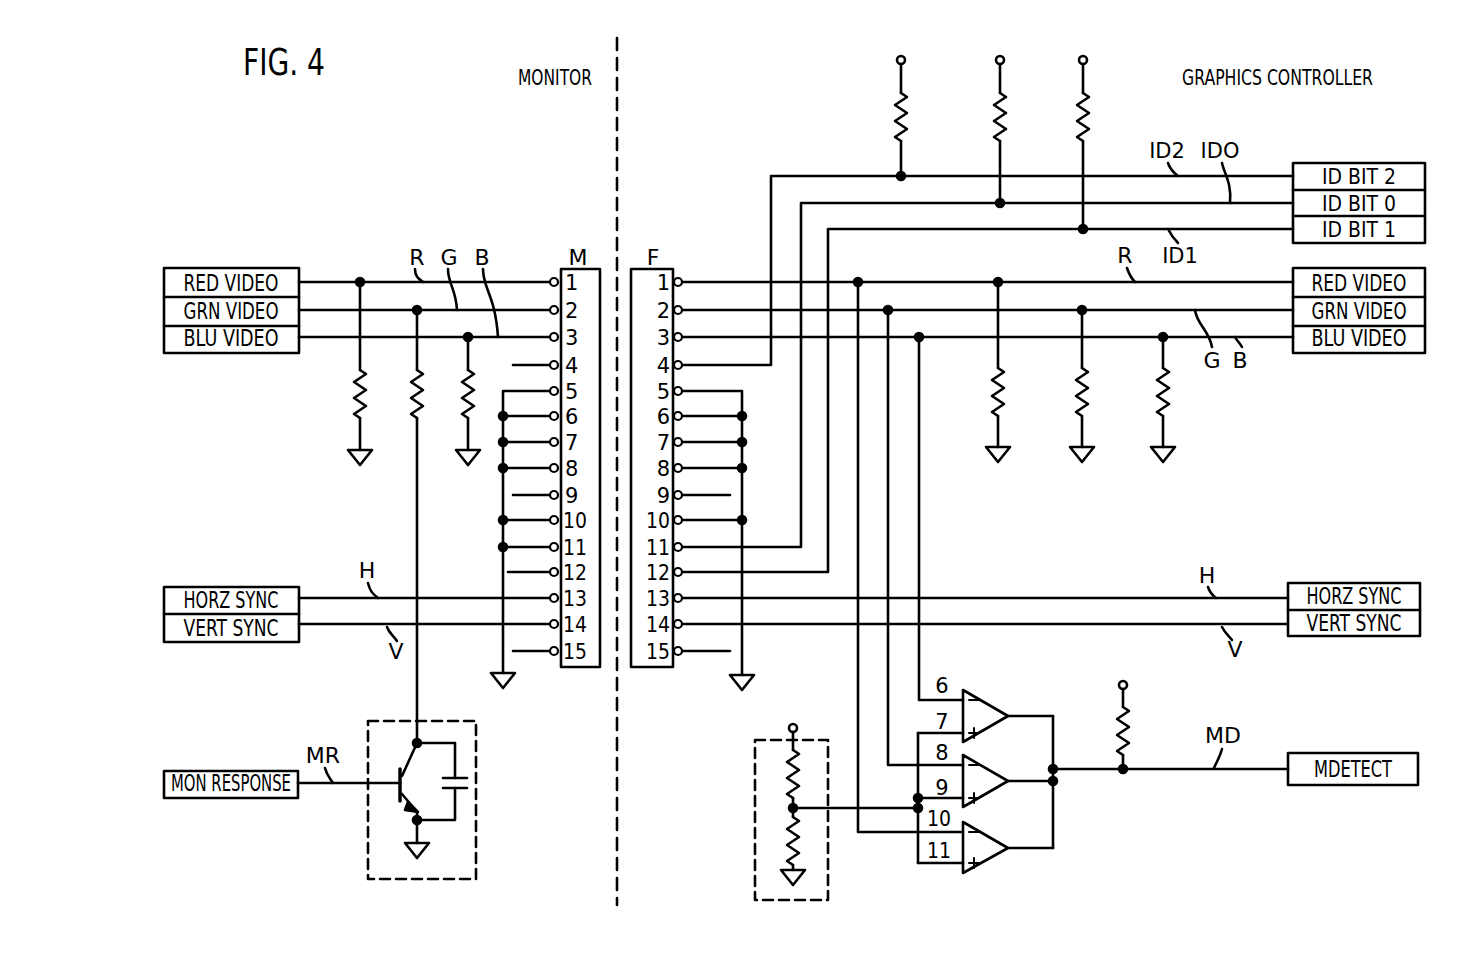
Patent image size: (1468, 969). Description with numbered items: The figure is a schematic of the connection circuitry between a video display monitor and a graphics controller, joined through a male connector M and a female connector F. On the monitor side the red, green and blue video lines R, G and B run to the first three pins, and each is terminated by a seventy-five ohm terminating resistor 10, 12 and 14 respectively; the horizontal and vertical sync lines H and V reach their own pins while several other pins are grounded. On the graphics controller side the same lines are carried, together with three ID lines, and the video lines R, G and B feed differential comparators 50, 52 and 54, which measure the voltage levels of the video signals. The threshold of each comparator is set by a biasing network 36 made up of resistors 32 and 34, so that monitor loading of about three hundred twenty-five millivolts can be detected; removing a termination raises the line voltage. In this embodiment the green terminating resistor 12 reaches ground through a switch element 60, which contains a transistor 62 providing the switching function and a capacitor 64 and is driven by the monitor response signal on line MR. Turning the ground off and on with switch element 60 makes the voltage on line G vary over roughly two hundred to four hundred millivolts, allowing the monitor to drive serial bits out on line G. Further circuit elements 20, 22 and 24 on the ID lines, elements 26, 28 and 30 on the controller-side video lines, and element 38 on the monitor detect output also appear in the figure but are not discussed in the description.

The terminating resistor 10 is at (353, 394).
The terminating resistor 12 is at (410, 394).
The terminating resistor 14 is at (462, 394).
The ID bit 2 pull-up resistor 20 is at (895, 114).
The ID bit 0 pull-up resistor 22 is at (997, 114).
The ID bit 1 pull-up resistor 24 is at (1081, 114).
The red video pull-down resistor 26 is at (992, 394).
The green video pull-down resistor 28 is at (1075, 394).
The blue video pull-down resistor 30 is at (1156, 394).
The resistor 32 is at (789, 771).
The resistor 34 is at (790, 841).
The biasing network 36 is at (754, 772).
The monitor detect pull-up resistor 38 is at (1133, 719).
The differential comparator 50 is at (987, 704).
The differential comparator 52 is at (987, 770).
The differential comparator 54 is at (987, 836).
The switch element 60 is at (368, 857).
The transistor 62 is at (404, 769).
The capacitor 64 is at (467, 797).